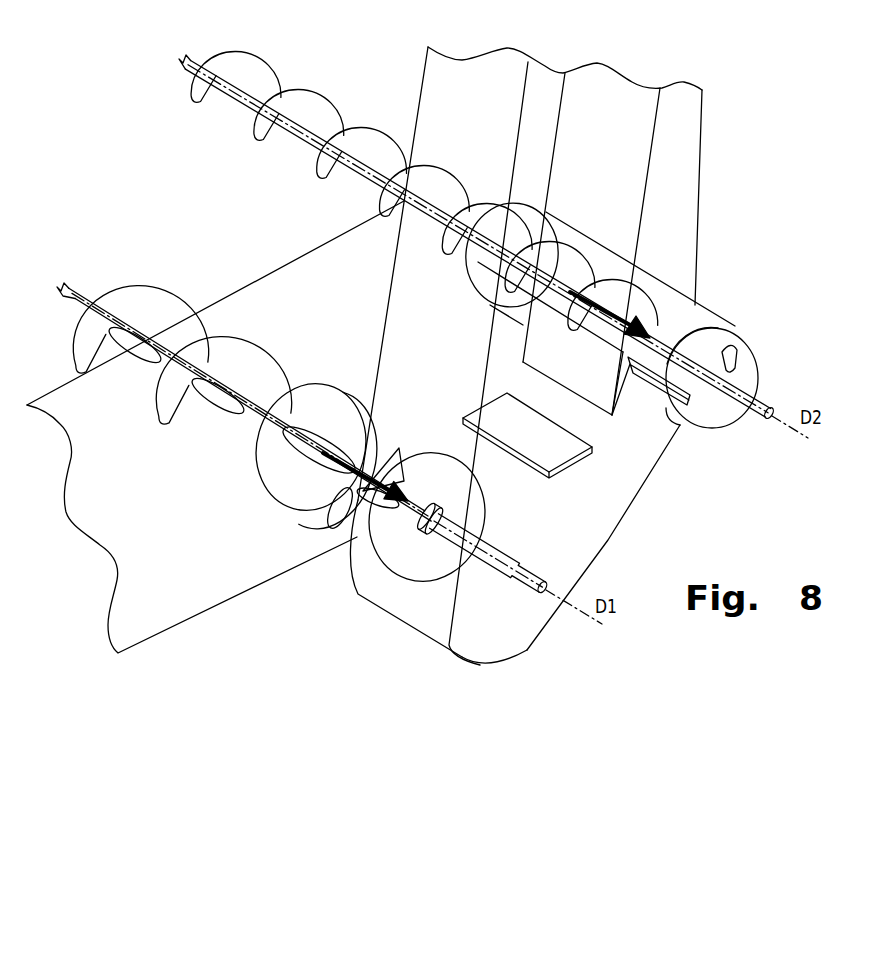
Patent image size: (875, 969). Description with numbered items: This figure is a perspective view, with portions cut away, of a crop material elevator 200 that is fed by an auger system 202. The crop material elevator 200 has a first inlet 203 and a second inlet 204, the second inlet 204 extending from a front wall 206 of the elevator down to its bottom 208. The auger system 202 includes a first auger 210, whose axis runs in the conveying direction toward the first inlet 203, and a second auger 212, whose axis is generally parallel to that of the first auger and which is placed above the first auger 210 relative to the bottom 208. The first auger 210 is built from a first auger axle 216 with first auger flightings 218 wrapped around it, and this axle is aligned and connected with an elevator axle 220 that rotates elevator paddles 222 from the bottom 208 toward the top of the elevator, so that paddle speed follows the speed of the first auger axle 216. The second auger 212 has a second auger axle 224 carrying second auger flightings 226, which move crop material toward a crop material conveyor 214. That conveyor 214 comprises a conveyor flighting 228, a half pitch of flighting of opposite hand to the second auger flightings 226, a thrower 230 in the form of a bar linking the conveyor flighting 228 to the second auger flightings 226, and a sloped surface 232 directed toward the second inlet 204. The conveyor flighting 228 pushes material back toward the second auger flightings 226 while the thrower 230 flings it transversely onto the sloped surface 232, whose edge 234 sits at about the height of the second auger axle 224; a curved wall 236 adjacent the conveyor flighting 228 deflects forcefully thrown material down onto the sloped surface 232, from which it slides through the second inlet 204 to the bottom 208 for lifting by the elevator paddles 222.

The crop material elevator 200 is at (415, 342).
The auger system 202 is at (222, 161).
The first inlet 203 is at (360, 585).
The second inlet 204 is at (600, 410).
The front wall 206 is at (640, 223).
The bottom 208 is at (527, 655).
The first auger 210 is at (312, 382).
The second auger 212 is at (471, 186).
The crop material conveyor 214 is at (681, 446).
The first auger axle 216 is at (237, 410).
The first auger flightings 218 is at (238, 338).
The elevator axle 220 is at (523, 560).
The elevator paddles 222 is at (560, 463).
The second auger axle 224 is at (372, 173).
The second auger flightings 226 is at (330, 86).
The conveyor flighting 228 is at (740, 356).
The thrower 230 is at (652, 400).
The sloped surface 232 is at (670, 455).
The edge 234 is at (676, 437).
The curved wall 236 is at (632, 356).